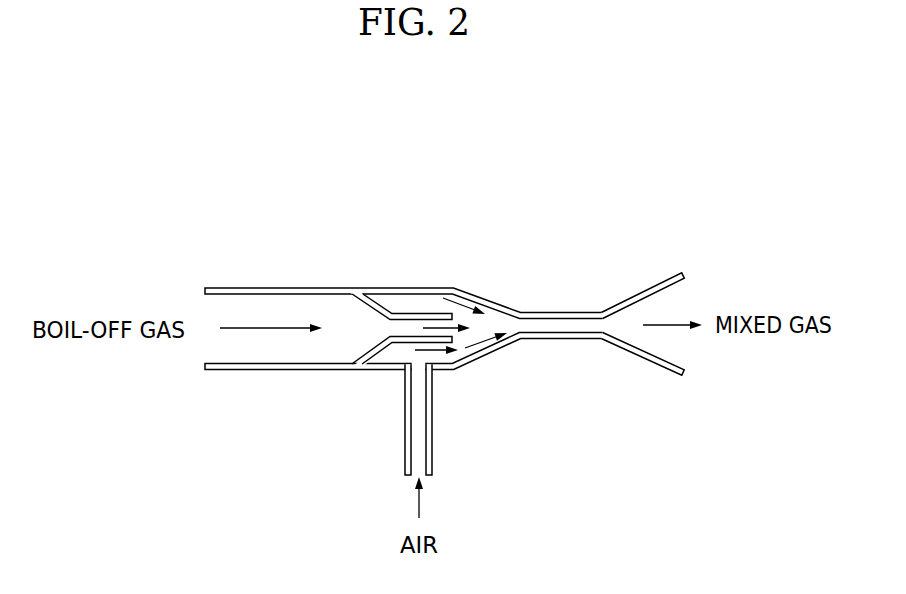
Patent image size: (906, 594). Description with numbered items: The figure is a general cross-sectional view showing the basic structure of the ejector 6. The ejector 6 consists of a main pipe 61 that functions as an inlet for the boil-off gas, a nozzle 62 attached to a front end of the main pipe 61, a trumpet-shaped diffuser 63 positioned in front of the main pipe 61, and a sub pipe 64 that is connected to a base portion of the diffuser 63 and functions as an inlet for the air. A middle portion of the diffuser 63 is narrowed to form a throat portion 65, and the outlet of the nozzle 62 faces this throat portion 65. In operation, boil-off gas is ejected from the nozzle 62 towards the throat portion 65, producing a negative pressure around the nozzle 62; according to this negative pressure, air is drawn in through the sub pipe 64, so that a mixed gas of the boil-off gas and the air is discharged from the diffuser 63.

The ejector 6 is at (444, 303).
The main pipe 61 is at (260, 289).
The nozzle 62 is at (428, 313).
The diffuser 63 is at (643, 288).
The sub pipe 64 is at (435, 430).
The throat portion 65 is at (562, 340).